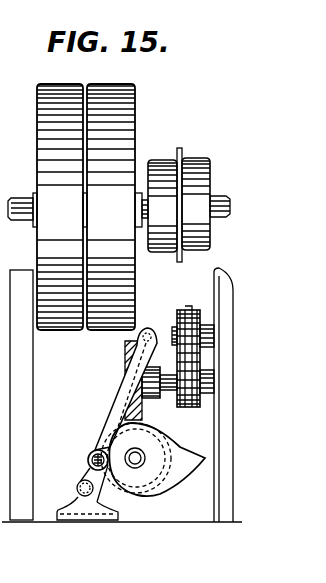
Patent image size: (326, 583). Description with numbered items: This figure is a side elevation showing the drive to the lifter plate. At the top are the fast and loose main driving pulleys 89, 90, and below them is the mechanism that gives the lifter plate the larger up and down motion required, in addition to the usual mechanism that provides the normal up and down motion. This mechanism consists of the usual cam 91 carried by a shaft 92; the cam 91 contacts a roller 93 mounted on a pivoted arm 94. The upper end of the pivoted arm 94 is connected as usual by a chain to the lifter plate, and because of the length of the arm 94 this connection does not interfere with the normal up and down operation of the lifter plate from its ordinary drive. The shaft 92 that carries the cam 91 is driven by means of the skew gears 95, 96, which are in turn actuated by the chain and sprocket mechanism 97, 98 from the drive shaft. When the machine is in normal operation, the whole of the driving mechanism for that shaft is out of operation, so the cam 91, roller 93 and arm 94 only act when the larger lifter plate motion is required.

The fast main driving pulley 89 is at (60, 207).
The loose main driving pulley 90 is at (111, 207).
The cam 91 is at (184, 466).
The shaft 92 is at (136, 468).
The roller 93 is at (89, 453).
The pivoted arm 94 is at (122, 386).
The skew gear 95 is at (205, 396).
The skew gear 96 is at (143, 410).
The chain and sprocket mechanism 97 is at (188, 307).
The chain and sprocket mechanism 98 is at (174, 452).